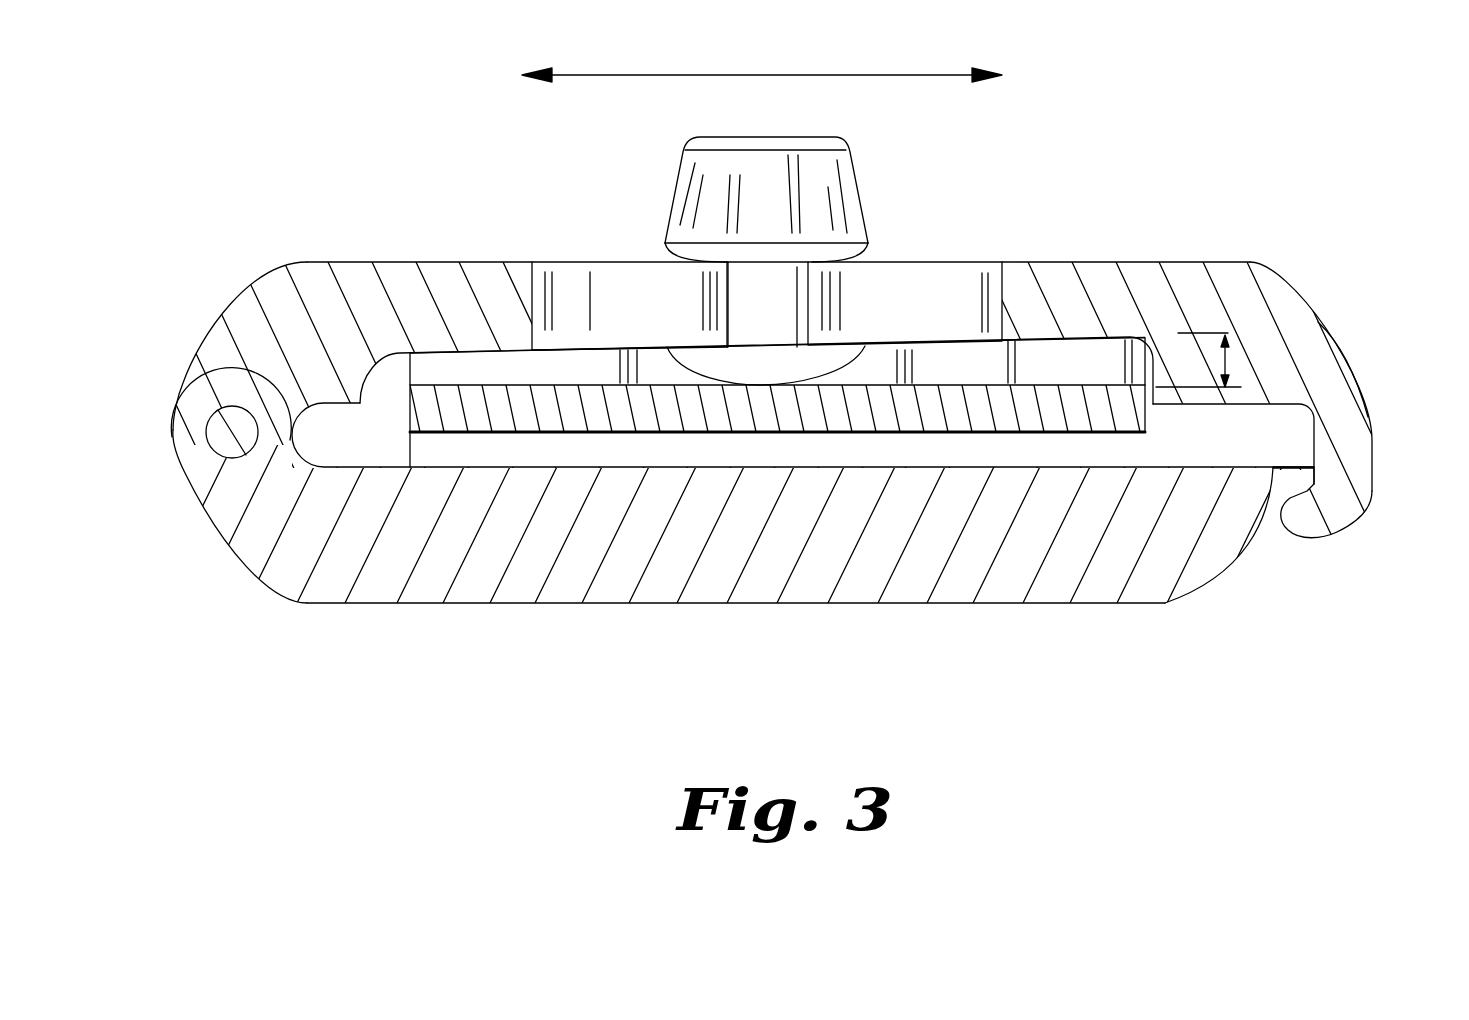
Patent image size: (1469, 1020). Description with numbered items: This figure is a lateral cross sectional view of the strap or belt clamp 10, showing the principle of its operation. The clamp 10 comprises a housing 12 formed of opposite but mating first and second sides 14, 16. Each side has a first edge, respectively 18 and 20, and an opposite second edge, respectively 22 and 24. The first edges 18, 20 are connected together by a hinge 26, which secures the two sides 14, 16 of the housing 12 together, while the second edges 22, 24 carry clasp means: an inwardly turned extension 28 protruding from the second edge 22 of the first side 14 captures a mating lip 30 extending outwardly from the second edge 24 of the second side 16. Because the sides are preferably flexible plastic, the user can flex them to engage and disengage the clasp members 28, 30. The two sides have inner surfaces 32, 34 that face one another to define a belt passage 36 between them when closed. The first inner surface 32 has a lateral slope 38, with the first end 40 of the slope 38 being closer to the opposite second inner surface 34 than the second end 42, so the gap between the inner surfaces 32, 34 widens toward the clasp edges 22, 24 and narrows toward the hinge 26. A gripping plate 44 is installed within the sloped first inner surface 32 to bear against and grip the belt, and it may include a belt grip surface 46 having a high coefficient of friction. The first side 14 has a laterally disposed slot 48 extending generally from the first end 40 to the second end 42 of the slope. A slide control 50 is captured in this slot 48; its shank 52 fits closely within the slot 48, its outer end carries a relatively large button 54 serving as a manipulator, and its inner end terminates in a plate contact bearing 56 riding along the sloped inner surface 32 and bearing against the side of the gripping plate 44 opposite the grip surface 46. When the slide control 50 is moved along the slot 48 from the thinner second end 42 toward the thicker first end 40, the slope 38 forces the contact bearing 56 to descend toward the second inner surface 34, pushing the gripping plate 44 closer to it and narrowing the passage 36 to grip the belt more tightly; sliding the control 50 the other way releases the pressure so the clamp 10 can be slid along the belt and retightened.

The clamp 10 is at (806, 640).
The housing 12 is at (402, 603).
The first side 14 is at (392, 329).
The second side 16 is at (387, 542).
The first edge 18 is at (211, 342).
The first edge 20 is at (197, 497).
The second edge 22 is at (1363, 386).
The second edge 24 is at (1247, 556).
The hinge 26 is at (175, 450).
The inwardly turned extension 28 is at (1299, 540).
The lip 30 is at (1314, 478).
The first inner surface 32 is at (1098, 337).
The second inner surface 34 is at (1273, 467).
The belt passage 36 is at (1220, 452).
The lateral slope 38 is at (1225, 342).
The first end 40 is at (428, 353).
The second end 42 is at (1143, 390).
The gripping plate 44 is at (490, 385).
The grip surface 46 is at (580, 433).
The slot 48 is at (655, 326).
The slide control 50 is at (860, 187).
The shank 52 is at (785, 318).
The button 54 is at (790, 218).
The plate contact bearing 56 is at (835, 355).